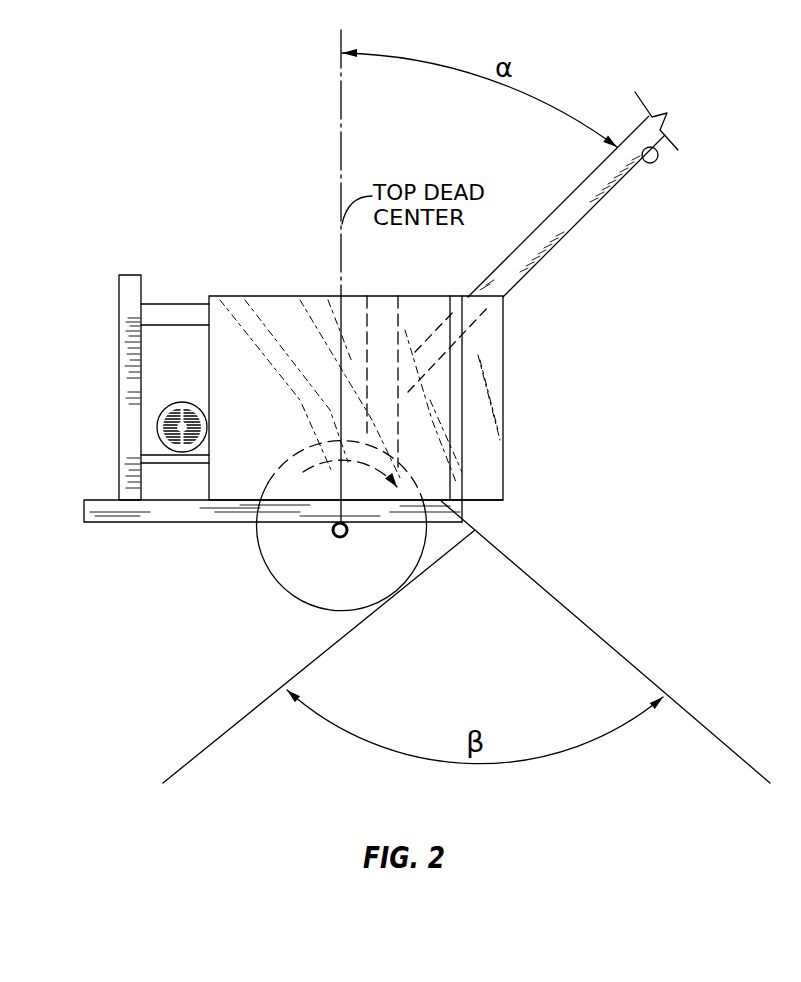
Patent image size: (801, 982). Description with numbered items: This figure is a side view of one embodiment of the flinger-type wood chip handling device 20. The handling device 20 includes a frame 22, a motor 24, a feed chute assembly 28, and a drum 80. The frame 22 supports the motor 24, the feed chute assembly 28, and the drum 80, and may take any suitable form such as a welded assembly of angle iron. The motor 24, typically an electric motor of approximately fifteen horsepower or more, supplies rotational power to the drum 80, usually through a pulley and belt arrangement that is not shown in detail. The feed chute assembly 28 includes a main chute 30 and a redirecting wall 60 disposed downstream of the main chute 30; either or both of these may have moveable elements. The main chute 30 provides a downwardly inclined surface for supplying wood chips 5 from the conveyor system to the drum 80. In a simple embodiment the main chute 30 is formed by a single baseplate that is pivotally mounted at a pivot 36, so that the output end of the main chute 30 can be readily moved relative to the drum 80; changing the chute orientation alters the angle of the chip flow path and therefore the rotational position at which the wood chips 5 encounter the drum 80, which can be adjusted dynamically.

The handling device 20 is at (226, 209).
The frame 22 is at (128, 422).
The motor 24 is at (178, 403).
The feed chute assembly 28 is at (507, 207).
The main chute 30 is at (563, 223).
The pivot 36 is at (650, 163).
The redirecting wall 60 is at (383, 312).
The drum 80 is at (232, 568).
The wood chips 5 is at (592, 648).